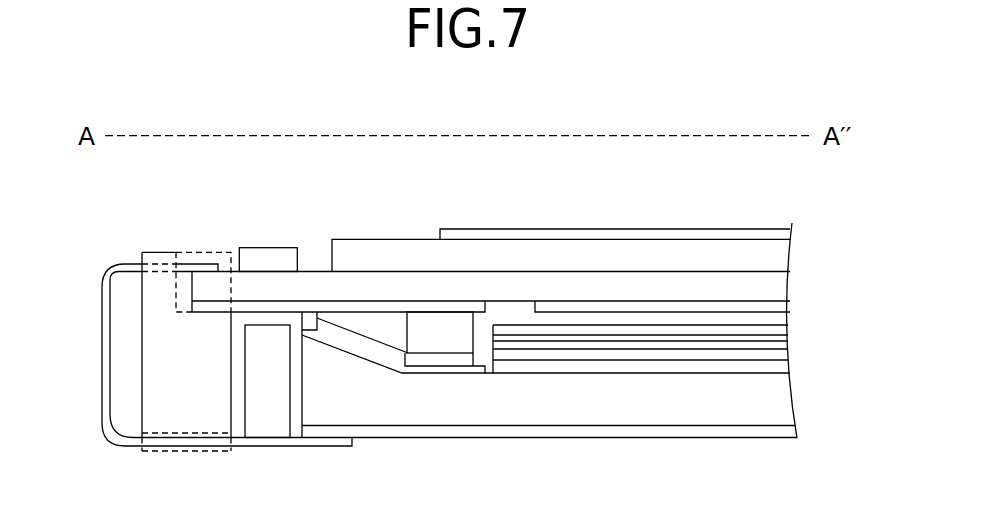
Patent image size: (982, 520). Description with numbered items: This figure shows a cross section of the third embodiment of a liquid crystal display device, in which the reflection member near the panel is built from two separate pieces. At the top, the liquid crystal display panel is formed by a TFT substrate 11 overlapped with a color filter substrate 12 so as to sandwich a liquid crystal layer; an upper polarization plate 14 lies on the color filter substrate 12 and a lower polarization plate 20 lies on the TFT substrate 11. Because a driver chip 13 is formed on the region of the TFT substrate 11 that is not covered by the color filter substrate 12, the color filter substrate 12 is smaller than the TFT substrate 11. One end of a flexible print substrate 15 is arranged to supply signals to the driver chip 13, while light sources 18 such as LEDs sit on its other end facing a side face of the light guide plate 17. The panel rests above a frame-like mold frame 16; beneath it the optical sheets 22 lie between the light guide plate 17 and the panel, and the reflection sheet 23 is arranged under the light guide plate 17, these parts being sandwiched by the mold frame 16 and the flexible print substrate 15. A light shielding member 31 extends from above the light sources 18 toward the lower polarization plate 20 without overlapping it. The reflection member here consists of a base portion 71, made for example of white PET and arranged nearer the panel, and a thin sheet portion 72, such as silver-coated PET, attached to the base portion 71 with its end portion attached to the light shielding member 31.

The TFT substrate 11 is at (777, 283).
The color filter substrate 12 is at (777, 253).
The driver chip 13 is at (268, 258).
The upper polarization plate 14 is at (760, 233).
The flexible print substrate 15 is at (106, 323).
The mold frame 16 is at (160, 256).
The light guide plate 17 is at (777, 397).
The light sources 18 is at (268, 420).
The lower polarization plate 20 is at (777, 307).
The optical sheets 22 is at (808, 322).
The reflection sheet 23 is at (738, 430).
The light shielding member 31 is at (326, 305).
The base portion 71 is at (442, 328).
The sheet portion 72 is at (442, 361).